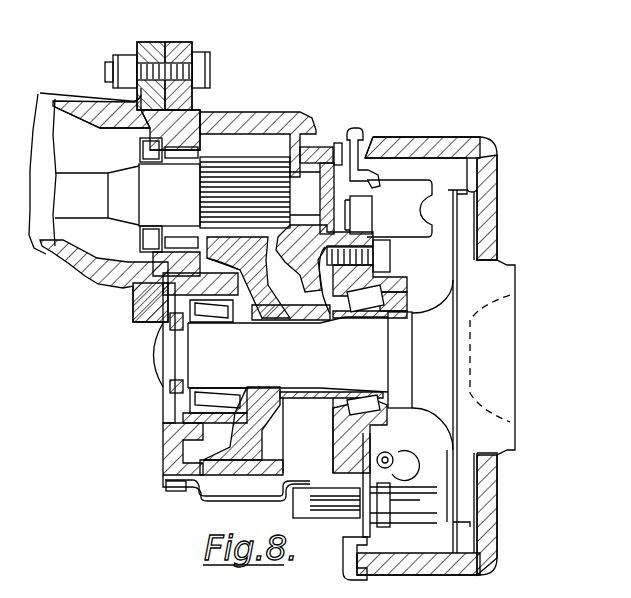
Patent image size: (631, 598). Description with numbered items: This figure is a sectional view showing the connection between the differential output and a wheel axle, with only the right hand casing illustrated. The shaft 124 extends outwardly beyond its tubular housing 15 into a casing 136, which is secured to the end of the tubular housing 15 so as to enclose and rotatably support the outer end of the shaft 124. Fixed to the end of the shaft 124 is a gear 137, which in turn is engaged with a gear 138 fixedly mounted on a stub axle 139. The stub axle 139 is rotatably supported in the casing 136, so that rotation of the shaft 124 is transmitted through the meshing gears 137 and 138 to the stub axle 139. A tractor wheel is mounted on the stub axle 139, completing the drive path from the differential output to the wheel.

The tubular housing 15 is at (80, 102).
The casing 136 is at (172, 52).
The gear 137 is at (247, 158).
The gear 138 is at (258, 279).
The stub axle 139 is at (273, 370).
The shaft 124 is at (82, 196).